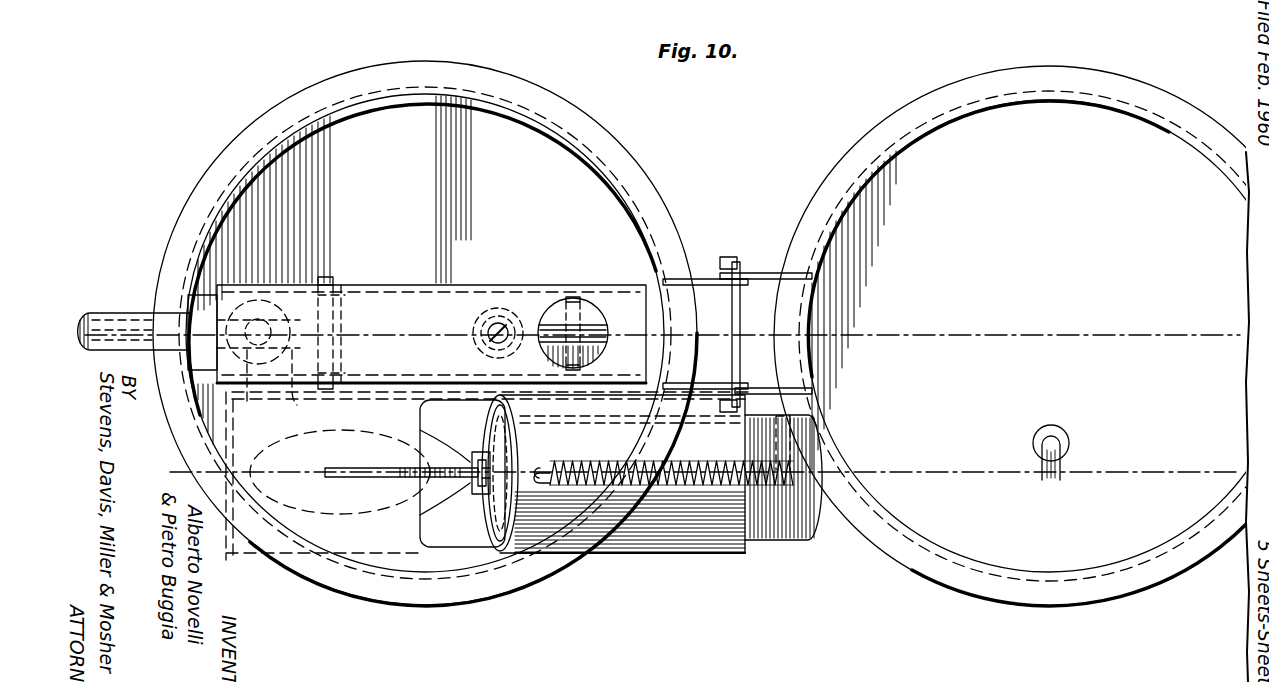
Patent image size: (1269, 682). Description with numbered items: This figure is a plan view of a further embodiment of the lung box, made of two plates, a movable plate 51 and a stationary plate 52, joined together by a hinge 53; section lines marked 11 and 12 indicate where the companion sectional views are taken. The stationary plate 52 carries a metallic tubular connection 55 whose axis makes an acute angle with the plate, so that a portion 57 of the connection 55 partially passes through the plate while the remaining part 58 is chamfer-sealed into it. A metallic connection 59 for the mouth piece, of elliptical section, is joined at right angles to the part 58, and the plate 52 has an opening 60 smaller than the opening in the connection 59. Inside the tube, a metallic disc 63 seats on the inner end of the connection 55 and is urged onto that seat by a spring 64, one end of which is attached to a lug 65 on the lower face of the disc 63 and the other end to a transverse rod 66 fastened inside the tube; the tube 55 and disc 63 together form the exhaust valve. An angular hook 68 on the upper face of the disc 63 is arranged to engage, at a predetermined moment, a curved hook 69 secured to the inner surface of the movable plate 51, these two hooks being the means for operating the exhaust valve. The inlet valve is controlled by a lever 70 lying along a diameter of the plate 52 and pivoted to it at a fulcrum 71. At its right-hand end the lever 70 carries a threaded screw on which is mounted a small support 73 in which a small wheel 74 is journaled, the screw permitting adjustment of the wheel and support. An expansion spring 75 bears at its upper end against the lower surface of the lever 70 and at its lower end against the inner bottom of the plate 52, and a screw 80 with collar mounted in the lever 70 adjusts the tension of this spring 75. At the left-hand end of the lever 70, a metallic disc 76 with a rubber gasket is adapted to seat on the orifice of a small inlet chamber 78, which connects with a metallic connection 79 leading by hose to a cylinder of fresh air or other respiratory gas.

The movable plate 51 is at (878, 130).
The stationary plate 52 is at (598, 137).
The hinge 53 is at (731, 262).
The metallic tubular connection 55 is at (773, 540).
The portion of the connection 57 is at (558, 449).
The remaining part of the connection 58 is at (436, 560).
The metallic connection for the mouth piece 59 is at (427, 514).
The opening 60 is at (424, 410).
The metallic disc 63 is at (493, 510).
The spring 64 is at (593, 462).
The lug 65 is at (478, 480).
The transverse rod 66 is at (792, 462).
The angular hook 68 is at (364, 470).
The curved hook 69 is at (1062, 490).
The lever 70 is at (380, 285).
The fulcrum 71 is at (332, 270).
The small support 73 is at (581, 325).
The small wheel 74 is at (604, 334).
The expansion spring 75 is at (506, 312).
The metallic disc 76 is at (300, 388).
The small inlet chamber 78 is at (258, 363).
The metallic connection 79 is at (82, 313).
The screw 80 is at (490, 330).
The section line 11- 11 is at (166, 436).
The section line 12- 12 is at (102, 346).